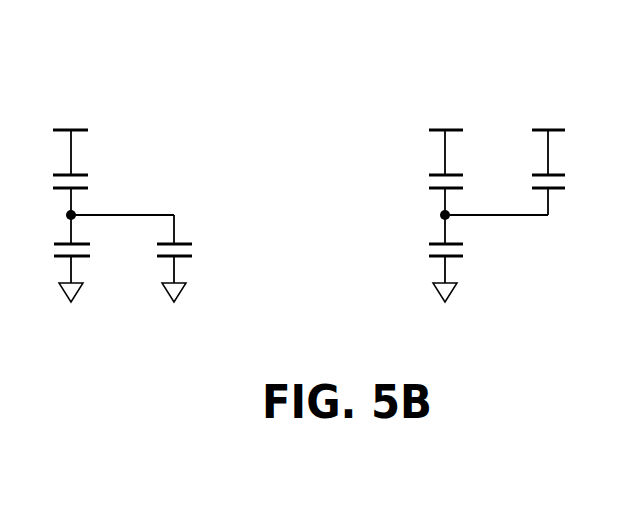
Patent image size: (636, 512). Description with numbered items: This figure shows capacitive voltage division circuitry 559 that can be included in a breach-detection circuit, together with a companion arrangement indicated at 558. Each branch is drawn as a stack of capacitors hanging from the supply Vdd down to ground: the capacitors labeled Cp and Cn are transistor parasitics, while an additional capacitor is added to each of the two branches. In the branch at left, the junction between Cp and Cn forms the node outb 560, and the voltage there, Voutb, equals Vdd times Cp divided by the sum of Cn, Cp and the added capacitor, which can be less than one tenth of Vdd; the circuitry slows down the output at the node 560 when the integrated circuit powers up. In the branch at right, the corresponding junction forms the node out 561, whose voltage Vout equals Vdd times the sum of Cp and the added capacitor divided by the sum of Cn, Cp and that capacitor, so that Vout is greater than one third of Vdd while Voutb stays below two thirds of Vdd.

The first capacitive divider circuit (outB branch) 558 is at (0, 36).
The capacitive voltage division circuitry 559 is at (527, 64).
The node outb 560 is at (75, 211).
The node out 561 is at (449, 211).